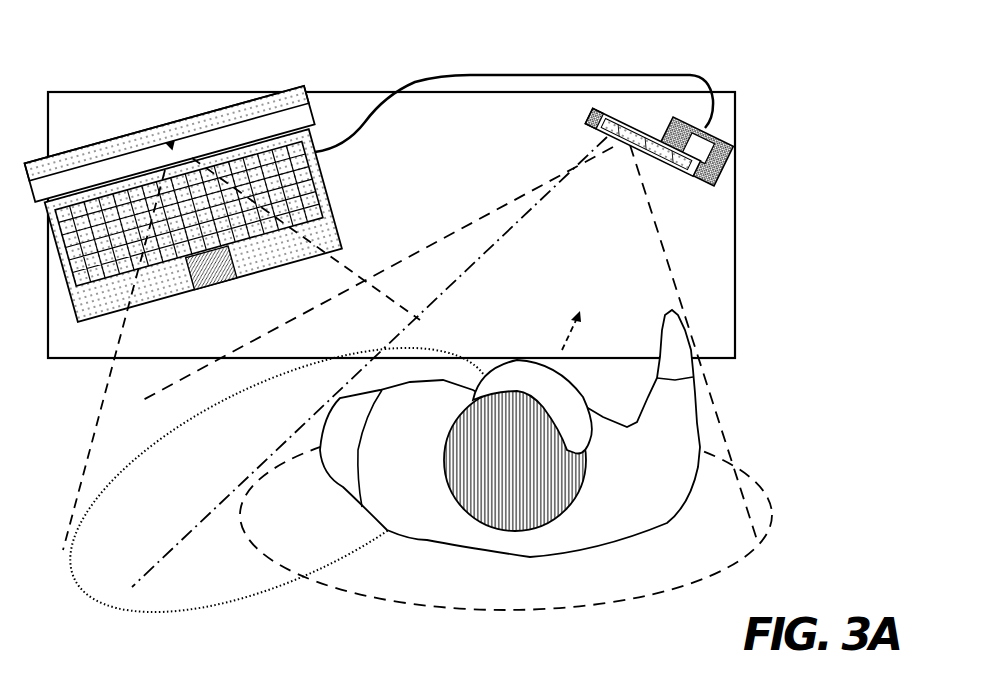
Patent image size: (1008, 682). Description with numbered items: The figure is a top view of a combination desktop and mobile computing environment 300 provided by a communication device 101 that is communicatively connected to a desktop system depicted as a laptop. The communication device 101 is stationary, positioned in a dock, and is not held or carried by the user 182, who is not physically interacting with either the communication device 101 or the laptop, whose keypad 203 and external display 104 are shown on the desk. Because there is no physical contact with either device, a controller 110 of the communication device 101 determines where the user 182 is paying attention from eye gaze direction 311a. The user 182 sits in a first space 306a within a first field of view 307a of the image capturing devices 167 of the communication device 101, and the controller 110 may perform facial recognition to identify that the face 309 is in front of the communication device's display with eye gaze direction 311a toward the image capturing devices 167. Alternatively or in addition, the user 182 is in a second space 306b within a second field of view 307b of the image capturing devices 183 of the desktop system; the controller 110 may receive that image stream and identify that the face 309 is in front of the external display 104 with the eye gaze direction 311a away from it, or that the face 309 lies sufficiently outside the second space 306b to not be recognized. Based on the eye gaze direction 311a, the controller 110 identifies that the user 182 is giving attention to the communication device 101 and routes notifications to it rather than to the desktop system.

The communication device 101 is at (752, 82).
The external display 104 is at (113, 140).
The controller 110 is at (692, 176).
The image capturing devices 167 is at (643, 148).
The user 182 is at (698, 468).
The image capturing devices 183 is at (167, 147).
The keypad 203 is at (717, 167).
The combination desktop and mobile computing environment 300 is at (174, 162).
The first space 306a is at (767, 537).
The second space 306b is at (203, 607).
The first field of view 307a is at (673, 282).
The second field of view 307b is at (397, 305).
The face 309 is at (580, 387).
The eye gaze direction 311a is at (568, 331).